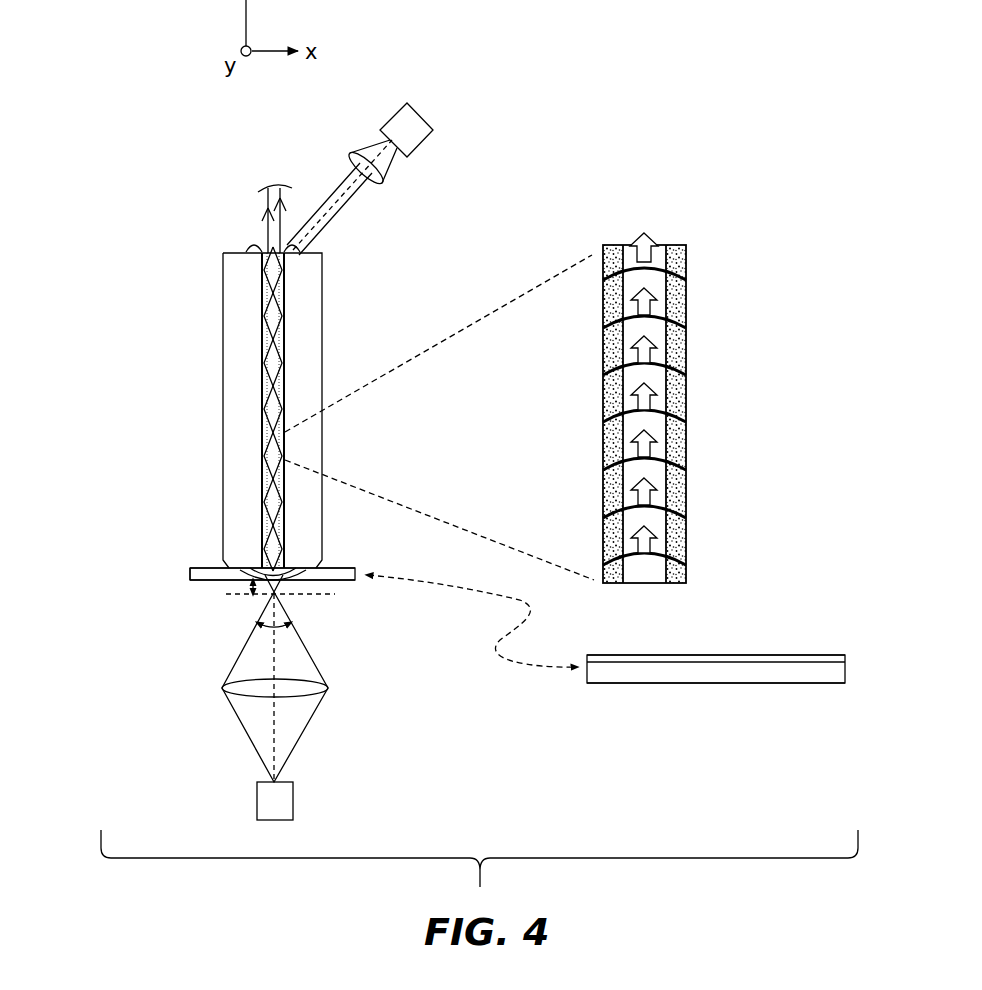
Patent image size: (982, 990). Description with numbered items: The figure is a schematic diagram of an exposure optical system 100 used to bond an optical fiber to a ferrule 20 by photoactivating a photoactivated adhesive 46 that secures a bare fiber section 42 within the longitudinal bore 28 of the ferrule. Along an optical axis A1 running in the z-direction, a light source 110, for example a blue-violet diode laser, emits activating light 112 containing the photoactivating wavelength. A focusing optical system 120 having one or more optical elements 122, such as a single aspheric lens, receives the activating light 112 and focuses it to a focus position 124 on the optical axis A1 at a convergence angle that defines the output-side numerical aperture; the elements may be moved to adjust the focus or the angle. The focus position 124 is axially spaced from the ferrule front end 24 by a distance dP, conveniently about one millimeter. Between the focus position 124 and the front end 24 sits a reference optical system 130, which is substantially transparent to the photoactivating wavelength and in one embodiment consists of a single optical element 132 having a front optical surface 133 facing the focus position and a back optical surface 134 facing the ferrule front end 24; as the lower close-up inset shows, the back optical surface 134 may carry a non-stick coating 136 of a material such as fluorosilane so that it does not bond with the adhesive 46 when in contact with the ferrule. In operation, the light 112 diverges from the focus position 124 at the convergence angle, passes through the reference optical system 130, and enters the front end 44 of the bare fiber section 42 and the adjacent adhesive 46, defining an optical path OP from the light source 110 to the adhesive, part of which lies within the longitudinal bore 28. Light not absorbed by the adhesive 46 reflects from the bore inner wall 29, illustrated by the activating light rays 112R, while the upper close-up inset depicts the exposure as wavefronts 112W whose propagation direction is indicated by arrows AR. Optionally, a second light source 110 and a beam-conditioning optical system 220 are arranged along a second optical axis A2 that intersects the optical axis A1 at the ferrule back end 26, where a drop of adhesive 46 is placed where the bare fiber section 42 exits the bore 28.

The exposure optical system 100 is at (147, 128).
The light source 110 is at (428, 148).
The activating light 112 is at (300, 729).
The activating light rays 112R is at (262, 200).
The wavefronts 112W is at (657, 268).
The focusing optical system 120 is at (437, 461).
The optical elements 122 is at (340, 212).
The focus position 124 is at (276, 598).
The reference optical system 130 is at (439, 620).
The optical element 132 is at (190, 573).
The front optical surface 133 is at (197, 583).
The back optical surface 134 is at (190, 568).
The non-stick coating 136 is at (797, 655).
The ferrule 20 is at (438, 391).
The front end 24 is at (235, 565).
The back end 26 is at (235, 253).
The longitudinal bore 28 is at (683, 398).
The inner wall 29 is at (673, 438).
The bare fiber section 42 is at (270, 388).
The front end 44 is at (300, 578).
The photoactivated adhesive 46 is at (258, 247).
The beam-conditioning optical system 220 is at (385, 183).
The arrows AR is at (655, 240).
The optical axis A1 is at (270, 727).
The second optical axis A2 is at (340, 193).
The optical path OP is at (260, 440).
The distance dP is at (252, 596).